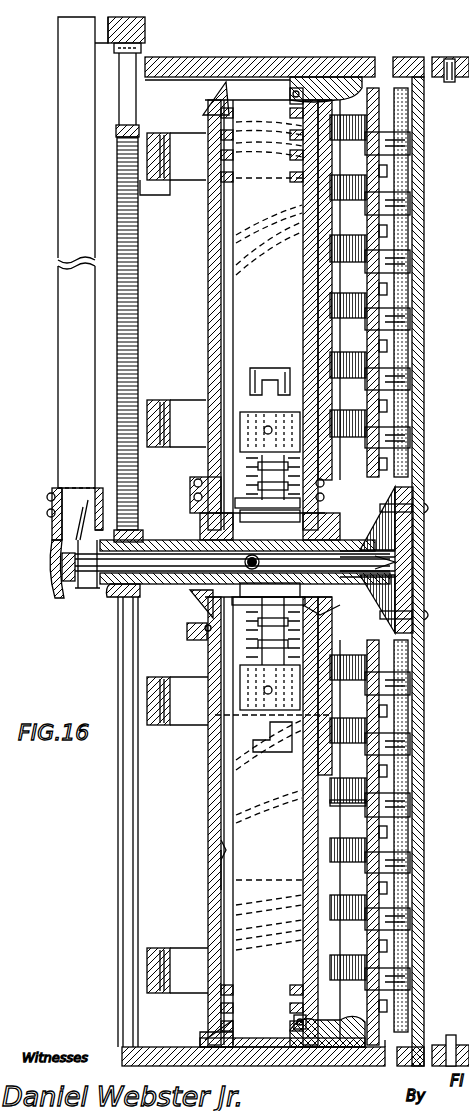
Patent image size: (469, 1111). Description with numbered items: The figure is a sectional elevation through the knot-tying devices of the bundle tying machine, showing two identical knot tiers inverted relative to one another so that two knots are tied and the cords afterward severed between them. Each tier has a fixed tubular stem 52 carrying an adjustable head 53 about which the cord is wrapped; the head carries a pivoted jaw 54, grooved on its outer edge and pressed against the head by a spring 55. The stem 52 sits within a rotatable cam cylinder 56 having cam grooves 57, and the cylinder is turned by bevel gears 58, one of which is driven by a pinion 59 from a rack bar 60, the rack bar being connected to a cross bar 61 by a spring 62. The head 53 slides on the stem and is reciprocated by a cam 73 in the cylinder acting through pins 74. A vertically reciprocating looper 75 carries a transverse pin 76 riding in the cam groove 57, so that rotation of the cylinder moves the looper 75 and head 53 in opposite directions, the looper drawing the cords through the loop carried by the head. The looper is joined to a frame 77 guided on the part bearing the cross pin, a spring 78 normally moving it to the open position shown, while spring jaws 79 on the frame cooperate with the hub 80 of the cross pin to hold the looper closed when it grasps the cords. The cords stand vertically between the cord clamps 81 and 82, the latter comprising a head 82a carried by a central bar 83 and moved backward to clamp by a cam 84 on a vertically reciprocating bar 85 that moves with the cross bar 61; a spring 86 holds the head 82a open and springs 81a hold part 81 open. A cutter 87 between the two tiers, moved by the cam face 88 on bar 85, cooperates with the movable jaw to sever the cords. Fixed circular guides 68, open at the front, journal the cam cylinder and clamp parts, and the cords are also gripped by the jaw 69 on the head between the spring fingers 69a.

The fixed tubular stem 52 is at (272, 572).
The adjustable head 53 is at (216, 98).
The pivoted jaw 54 is at (310, 90).
The spring 55 is at (268, 75).
The rotatable cam cylinder 56 is at (209, 866).
The cam groove 57 is at (216, 850).
The bevel gear 58 is at (191, 604).
The pinion 59 is at (118, 600).
The rack bar 60 is at (173, 290).
The cross bar 61 is at (143, 33).
The spring 62 is at (130, 97).
The fixed circular guide 68 is at (173, 727).
The jaw 69 is at (295, 1065).
The spring finger 69a is at (392, 1062).
The cam 73 is at (208, 987).
The pin 74 is at (220, 1007).
The looper 75 is at (271, 575).
The transverse pin 76 is at (332, 610).
The looper frame 77 is at (233, 690).
The spring 78 is at (235, 647).
The spring jaw 79 is at (270, 560).
The hub 80 is at (268, 593).
The cord clamp 81 is at (368, 242).
The spring 81a is at (350, 808).
The cord clamp 82 is at (424, 286).
The head 82a is at (410, 930).
The central bar 83 is at (98, 586).
The cam 84 is at (67, 544).
The vertically reciprocating bar 85 is at (83, 252).
The spring 86 is at (60, 573).
The cutter 87 is at (346, 556).
The cam face 88 is at (75, 514).